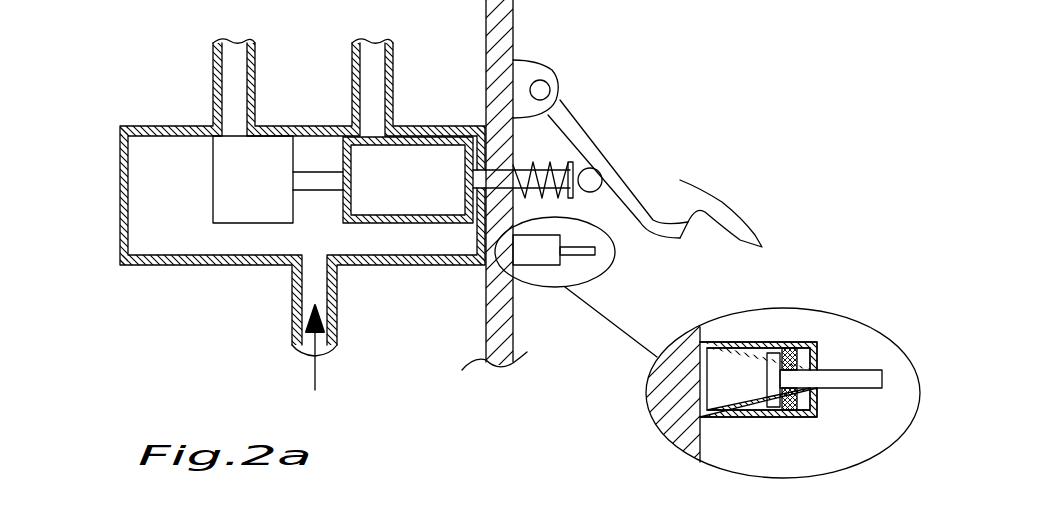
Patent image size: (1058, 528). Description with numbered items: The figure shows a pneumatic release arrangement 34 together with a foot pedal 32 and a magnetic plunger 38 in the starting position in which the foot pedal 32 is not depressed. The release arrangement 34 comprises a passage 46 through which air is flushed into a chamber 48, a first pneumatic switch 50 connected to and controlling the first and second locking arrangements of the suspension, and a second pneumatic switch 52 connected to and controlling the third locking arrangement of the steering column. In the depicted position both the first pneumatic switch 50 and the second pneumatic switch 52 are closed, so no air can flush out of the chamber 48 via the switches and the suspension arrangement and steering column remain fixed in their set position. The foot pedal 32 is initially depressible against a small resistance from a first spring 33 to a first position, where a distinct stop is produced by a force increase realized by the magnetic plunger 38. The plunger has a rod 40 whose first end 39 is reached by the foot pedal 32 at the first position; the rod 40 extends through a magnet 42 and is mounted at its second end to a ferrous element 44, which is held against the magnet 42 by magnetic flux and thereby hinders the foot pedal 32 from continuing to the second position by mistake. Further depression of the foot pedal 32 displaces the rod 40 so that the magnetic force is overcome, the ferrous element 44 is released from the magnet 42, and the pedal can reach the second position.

The release arrangement 34 is at (118, 121).
The second pneumatic switch 52 is at (237, 127).
The first pneumatic switch 50 is at (373, 127).
The passage 46 is at (312, 277).
The chamber 48 is at (177, 224).
The first spring 33 is at (548, 160).
The foot pedal 32 is at (620, 188).
The magnetic plunger 38 is at (540, 255).
The first end of the rod 39 is at (602, 251).
The rod 40 is at (836, 378).
The magnet 42 is at (790, 412).
The ferrous element 44 is at (765, 385).